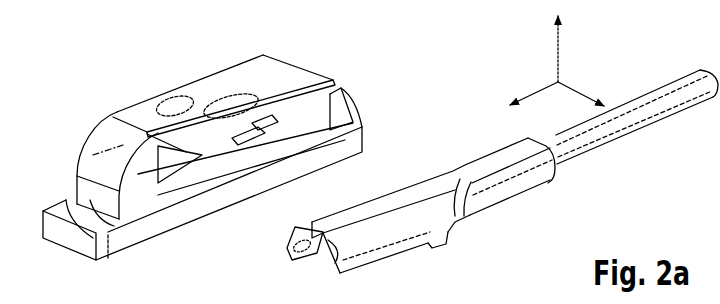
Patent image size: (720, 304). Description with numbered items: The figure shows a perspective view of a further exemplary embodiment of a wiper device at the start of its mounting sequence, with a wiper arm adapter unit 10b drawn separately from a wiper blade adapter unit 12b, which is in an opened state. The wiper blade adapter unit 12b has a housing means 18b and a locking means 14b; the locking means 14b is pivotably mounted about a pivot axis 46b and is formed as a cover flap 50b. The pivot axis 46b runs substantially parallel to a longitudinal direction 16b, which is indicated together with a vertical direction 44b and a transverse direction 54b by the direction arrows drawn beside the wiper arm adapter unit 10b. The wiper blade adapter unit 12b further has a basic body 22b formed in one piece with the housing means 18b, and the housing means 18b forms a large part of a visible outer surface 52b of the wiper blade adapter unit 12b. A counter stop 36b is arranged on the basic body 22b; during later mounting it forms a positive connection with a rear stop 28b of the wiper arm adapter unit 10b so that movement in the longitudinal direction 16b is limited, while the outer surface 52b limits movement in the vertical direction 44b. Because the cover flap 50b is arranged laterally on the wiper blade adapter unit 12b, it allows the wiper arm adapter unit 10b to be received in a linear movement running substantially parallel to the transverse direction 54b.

The wiper arm adapter unit 10b is at (533, 208).
The wiper blade adapter unit 12b is at (104, 91).
The locking means 14b is at (117, 78).
The longitudinal direction 16b is at (538, 92).
The housing means 18b is at (135, 102).
The basic body 22b is at (217, 170).
The rear stop 28b is at (446, 237).
The counter stop 36b is at (267, 113).
The vertical direction 44b is at (562, 53).
The pivot axis 46b is at (315, 63).
The cover flap 50b is at (220, 110).
The visible outer surface 52b is at (158, 185).
The transverse direction 54b is at (576, 90).